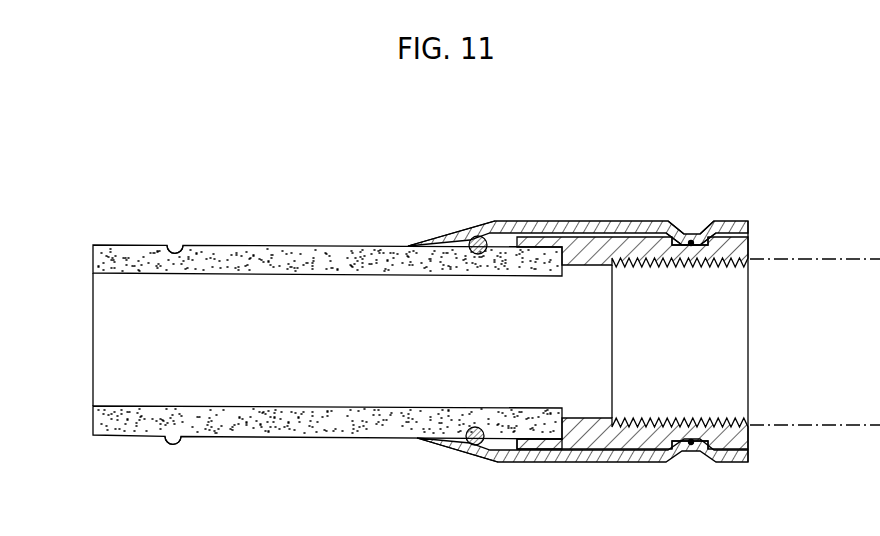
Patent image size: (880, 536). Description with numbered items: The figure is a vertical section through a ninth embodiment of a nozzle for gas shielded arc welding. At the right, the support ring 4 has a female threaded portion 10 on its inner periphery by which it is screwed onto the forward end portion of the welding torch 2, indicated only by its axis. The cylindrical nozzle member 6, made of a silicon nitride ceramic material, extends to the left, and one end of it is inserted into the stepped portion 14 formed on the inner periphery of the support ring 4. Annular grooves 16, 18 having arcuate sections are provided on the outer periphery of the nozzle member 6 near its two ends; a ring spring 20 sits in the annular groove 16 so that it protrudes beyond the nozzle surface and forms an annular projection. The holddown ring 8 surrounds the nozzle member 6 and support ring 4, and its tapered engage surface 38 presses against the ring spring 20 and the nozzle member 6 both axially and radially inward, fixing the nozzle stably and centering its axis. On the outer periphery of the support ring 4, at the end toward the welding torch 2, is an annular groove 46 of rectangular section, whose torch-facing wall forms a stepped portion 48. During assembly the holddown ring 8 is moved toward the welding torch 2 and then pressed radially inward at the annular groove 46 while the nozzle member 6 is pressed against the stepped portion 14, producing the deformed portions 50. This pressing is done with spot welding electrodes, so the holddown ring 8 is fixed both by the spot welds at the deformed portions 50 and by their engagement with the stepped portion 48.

The welding torch 2 is at (797, 258).
The support ring 4 is at (631, 240).
The nozzle member 6 is at (310, 250).
The holddown ring 8 is at (552, 221).
The female threaded portion 10 is at (734, 264).
The stepped portion 14 is at (548, 428).
The annular groove 16 is at (474, 236).
The annular groove 18 is at (175, 243).
The ring spring 20 is at (481, 234).
The tapered engage surface 38 is at (490, 443).
The annular groove 46 is at (704, 232).
The stepped portion 48 is at (677, 232).
The deformed portions 50 is at (690, 239).